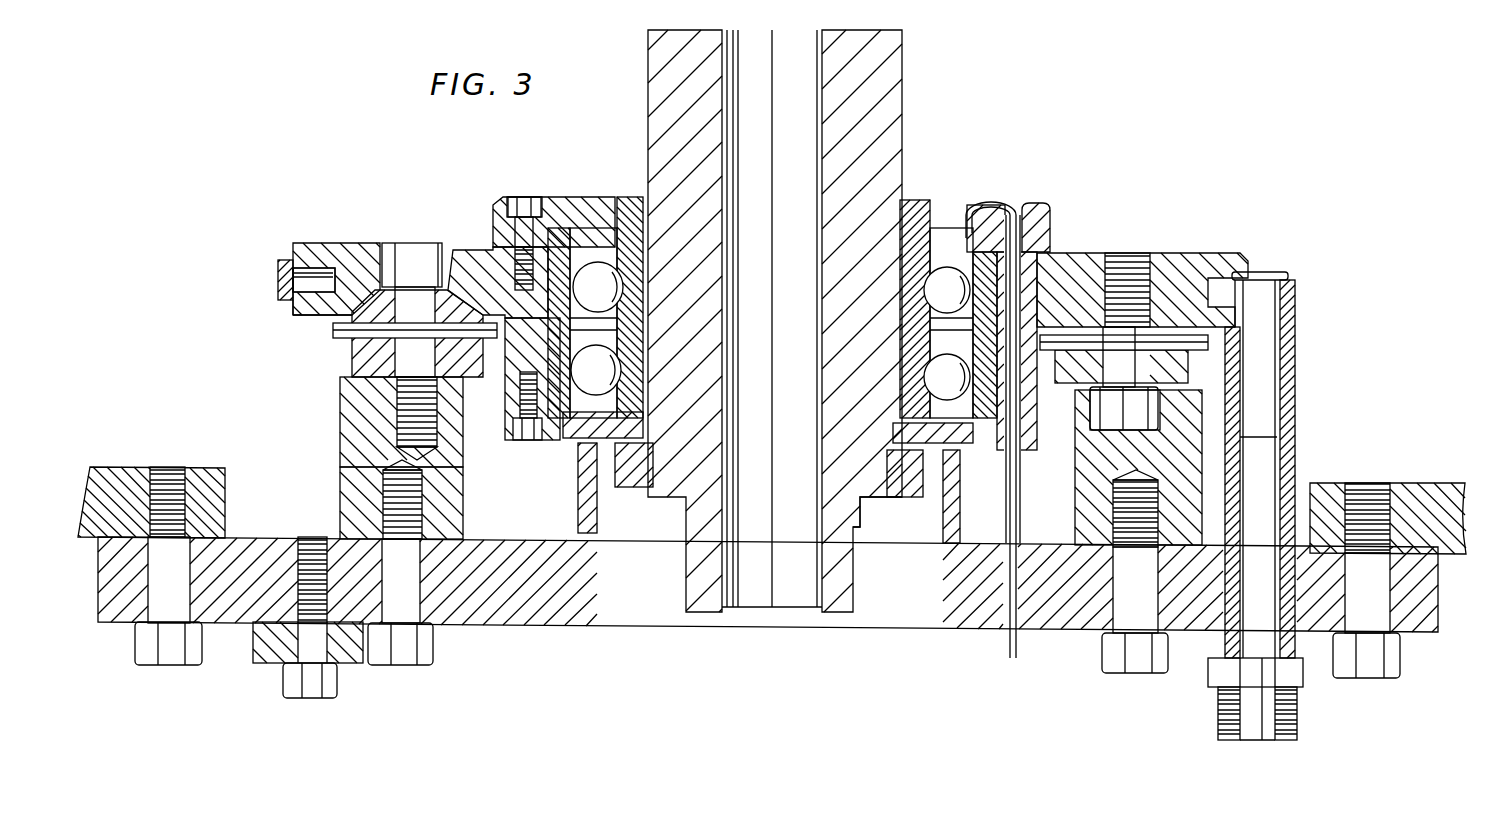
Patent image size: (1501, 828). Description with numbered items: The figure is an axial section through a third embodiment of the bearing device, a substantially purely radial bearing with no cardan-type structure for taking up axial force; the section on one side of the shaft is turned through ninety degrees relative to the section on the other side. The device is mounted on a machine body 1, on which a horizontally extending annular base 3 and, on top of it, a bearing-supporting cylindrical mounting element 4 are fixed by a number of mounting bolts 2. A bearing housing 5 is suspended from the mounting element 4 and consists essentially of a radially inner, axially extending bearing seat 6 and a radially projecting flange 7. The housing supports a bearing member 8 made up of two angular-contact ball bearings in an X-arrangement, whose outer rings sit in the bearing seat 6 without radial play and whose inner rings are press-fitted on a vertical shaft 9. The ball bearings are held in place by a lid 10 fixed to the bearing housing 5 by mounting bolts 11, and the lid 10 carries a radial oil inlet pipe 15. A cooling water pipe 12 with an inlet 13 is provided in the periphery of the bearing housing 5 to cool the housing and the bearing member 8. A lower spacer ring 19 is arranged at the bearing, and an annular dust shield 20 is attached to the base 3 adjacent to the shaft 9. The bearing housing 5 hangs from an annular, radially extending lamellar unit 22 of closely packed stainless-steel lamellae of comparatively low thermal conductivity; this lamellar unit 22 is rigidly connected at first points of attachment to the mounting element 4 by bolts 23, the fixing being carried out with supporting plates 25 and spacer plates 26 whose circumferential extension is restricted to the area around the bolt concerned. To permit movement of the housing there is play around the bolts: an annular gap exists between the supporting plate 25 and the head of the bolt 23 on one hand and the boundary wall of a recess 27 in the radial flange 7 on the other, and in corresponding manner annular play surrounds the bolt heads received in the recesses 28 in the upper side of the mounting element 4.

The machine body 1 is at (125, 467).
The mounting bolts 2 is at (433, 660).
The annular base 3 is at (228, 622).
The cylindrical mounting element 4 is at (463, 490).
The bearing housing 5 is at (274, 284).
The bearing seat 6 is at (505, 390).
The radially projecting flange 7 is at (293, 312).
The bearing member 8 is at (650, 318).
The vertical shaft 9 is at (773, 612).
The lid 10 is at (592, 194).
The mounting bolts 11 is at (520, 194).
The cooling water pipe 12 is at (1218, 252).
The inlet 13 is at (1297, 712).
The radial oil inlet pipe 15 is at (1008, 650).
The lower spacer ring 19 is at (900, 425).
The annular dust shield 20 is at (578, 488).
The lamellar unit 22 is at (333, 330).
The bolts 23 is at (405, 243).
The supporting plates 25 is at (360, 243).
The spacer plates 26 is at (338, 388).
The recess 27 is at (460, 250).
The recesses 28 is at (1158, 410).